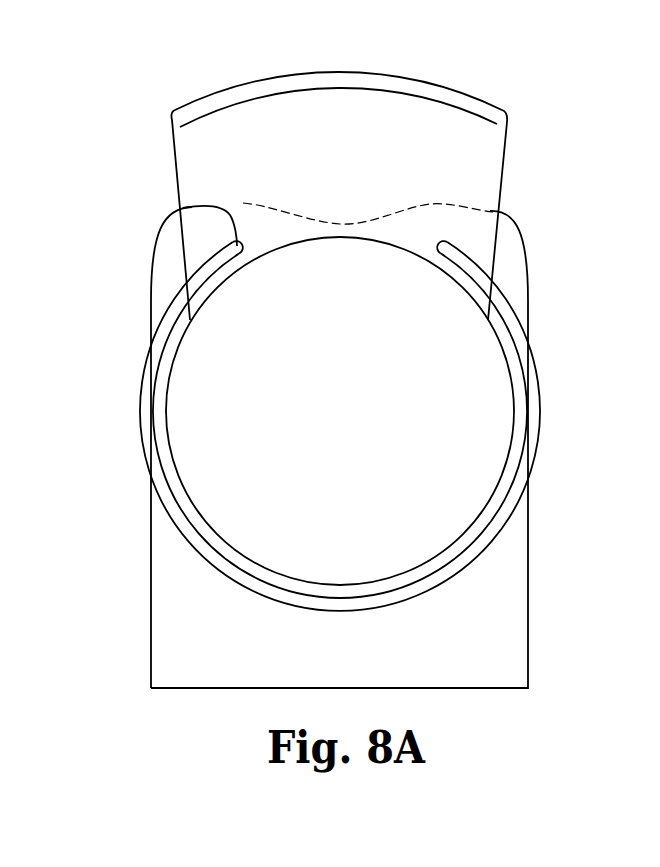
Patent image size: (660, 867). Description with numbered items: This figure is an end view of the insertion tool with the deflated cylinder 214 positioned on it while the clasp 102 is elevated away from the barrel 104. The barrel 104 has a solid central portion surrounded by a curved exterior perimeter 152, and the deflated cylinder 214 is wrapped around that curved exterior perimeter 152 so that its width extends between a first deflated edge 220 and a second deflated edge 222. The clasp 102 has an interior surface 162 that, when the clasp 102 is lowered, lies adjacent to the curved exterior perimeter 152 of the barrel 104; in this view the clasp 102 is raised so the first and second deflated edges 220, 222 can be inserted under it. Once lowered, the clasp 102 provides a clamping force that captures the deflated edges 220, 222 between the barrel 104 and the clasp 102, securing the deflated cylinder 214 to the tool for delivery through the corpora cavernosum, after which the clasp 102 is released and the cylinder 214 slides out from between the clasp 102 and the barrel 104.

The clasp 102 is at (460, 100).
The interior surface 162 is at (462, 147).
The barrel 104 is at (358, 433).
The curved exterior perimeter 152 is at (292, 382).
The deflated cylinder 214 is at (148, 458).
The first deflated edge 220 is at (440, 247).
The second deflated edge 222 is at (183, 208).